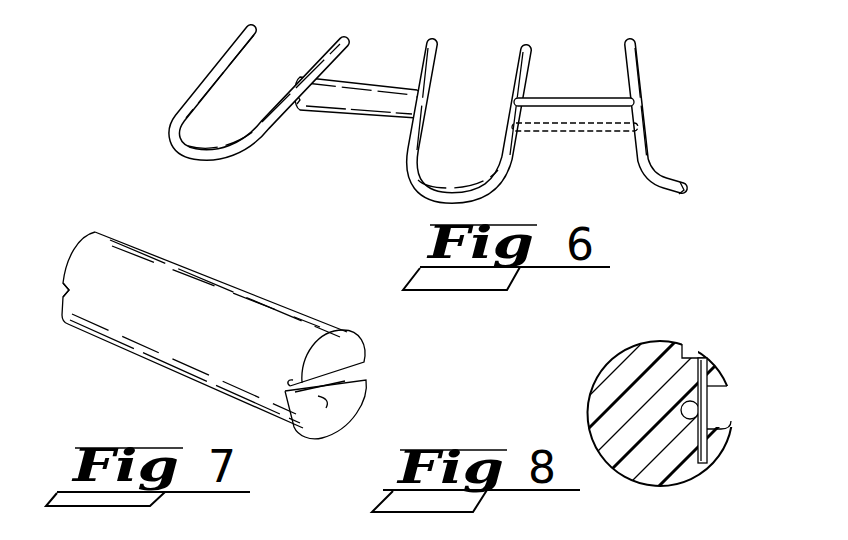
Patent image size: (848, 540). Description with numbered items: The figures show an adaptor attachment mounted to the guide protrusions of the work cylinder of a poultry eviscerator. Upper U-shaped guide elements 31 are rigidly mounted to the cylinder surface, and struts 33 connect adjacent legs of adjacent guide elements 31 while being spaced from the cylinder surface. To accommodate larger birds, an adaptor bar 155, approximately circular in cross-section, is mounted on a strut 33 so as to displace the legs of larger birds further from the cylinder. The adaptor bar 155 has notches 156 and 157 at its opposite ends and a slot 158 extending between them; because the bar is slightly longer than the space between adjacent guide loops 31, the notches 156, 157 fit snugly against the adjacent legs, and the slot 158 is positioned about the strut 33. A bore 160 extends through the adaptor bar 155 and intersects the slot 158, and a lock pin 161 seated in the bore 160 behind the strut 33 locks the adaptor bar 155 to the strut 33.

In FIG. 6, the upper U-shaped guide element 31 is at (241, 153).
In FIG. 6, the strut 33 is at (558, 99).
In FIG. 8, the strut 33 is at (693, 410).
In FIG. 6, the adaptor bar 155 is at (366, 107).
In FIG. 7, the adaptor bar 155 is at (138, 368).
In FIG. 8, the adaptor bar 155 is at (667, 337).
In FIG. 6, the notch 156 is at (299, 100).
In FIG. 7, the notch 156 is at (66, 296).
In FIG. 6, the notch 157 is at (418, 108).
In FIG. 7, the notch 157 is at (312, 398).
In FIG. 7, the slot 158 is at (337, 382).
In FIG. 8, the slot 158 is at (727, 426).
In FIG. 8, the bore 160 is at (702, 385).
In FIG. 8, the lock pin 161 is at (704, 397).